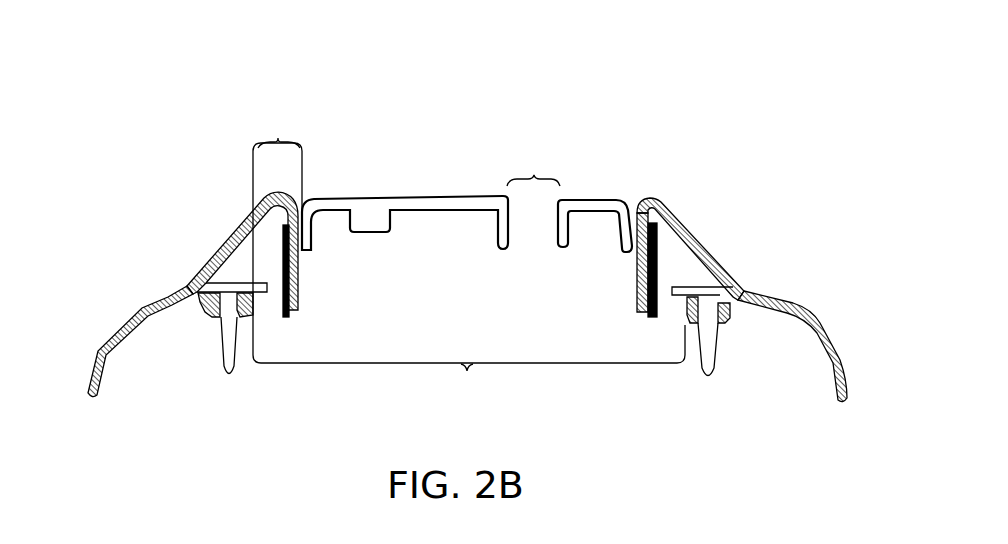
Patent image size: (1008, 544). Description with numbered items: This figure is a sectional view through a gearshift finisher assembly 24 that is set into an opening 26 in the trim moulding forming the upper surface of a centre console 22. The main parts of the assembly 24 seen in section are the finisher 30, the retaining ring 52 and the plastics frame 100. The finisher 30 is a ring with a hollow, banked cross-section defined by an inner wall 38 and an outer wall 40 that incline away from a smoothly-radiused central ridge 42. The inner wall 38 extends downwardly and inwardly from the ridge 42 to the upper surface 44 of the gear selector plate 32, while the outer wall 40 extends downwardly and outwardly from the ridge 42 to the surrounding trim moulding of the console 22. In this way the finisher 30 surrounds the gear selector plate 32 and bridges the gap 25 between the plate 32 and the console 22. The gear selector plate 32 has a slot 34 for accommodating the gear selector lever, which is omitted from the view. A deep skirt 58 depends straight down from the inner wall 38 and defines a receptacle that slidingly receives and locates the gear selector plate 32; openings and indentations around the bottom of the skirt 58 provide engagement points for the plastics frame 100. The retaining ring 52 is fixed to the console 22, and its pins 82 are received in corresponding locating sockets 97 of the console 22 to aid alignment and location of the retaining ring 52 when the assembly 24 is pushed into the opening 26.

The centre console 22 is at (105, 333).
The gearshift finisher assembly 24 is at (150, 248).
The gap 25 is at (277, 233).
The opening 26 is at (469, 363).
The finisher 30 is at (210, 253).
The gear selector plate 32 is at (373, 210).
The slot 34 is at (533, 167).
The inner wall 38 is at (573, 274).
The skirt 58 is at (637, 275).
The outer wall 40 is at (728, 258).
The central ridge 42 is at (660, 198).
The upper surface 44 is at (467, 136).
The retaining ring 52 is at (208, 313).
The pins 82 is at (708, 357).
The locating sockets 97 is at (723, 327).
The plastics frame 100 is at (282, 317).